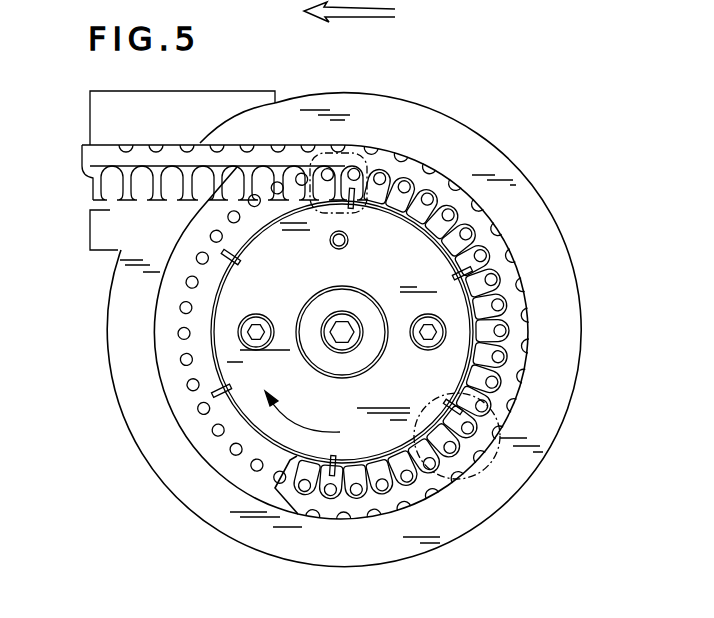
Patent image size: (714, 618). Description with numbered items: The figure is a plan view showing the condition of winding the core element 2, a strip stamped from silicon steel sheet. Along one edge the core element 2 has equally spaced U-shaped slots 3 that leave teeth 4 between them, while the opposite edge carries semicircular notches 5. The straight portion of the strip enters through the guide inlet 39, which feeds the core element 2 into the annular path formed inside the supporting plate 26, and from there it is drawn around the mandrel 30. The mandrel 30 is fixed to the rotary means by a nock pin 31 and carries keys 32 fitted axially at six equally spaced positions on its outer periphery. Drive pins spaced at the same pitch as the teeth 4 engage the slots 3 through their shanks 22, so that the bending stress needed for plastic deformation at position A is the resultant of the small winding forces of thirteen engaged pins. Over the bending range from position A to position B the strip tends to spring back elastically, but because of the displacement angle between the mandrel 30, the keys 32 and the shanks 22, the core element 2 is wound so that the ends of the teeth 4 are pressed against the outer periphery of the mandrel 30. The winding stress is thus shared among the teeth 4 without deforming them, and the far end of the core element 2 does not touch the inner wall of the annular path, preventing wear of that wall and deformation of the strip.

The core element 2 is at (296, 290).
The U-shaped slots 3 is at (117, 200).
The teeth 4 is at (97, 180).
The semicircular notches 5 is at (100, 152).
The shank 22 is at (452, 215).
The supporting plate 26 is at (323, 329).
The mandrel 30 is at (397, 332).
The nock pin 31 is at (348, 242).
The keys 32 is at (455, 273).
The guide inlet 39 is at (115, 143).
The position A is at (357, 150).
The position B is at (493, 465).